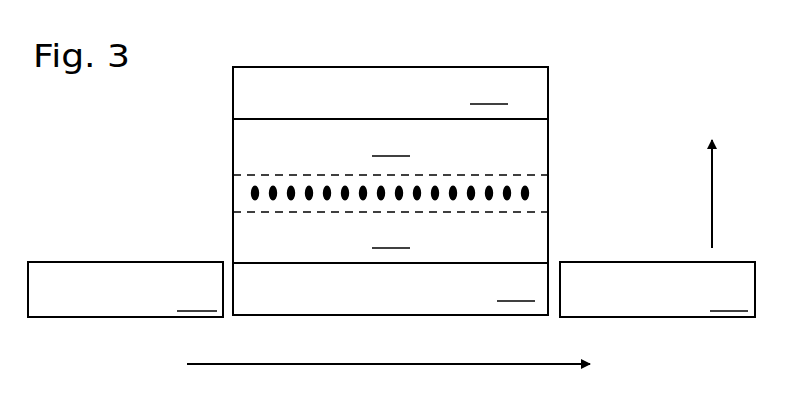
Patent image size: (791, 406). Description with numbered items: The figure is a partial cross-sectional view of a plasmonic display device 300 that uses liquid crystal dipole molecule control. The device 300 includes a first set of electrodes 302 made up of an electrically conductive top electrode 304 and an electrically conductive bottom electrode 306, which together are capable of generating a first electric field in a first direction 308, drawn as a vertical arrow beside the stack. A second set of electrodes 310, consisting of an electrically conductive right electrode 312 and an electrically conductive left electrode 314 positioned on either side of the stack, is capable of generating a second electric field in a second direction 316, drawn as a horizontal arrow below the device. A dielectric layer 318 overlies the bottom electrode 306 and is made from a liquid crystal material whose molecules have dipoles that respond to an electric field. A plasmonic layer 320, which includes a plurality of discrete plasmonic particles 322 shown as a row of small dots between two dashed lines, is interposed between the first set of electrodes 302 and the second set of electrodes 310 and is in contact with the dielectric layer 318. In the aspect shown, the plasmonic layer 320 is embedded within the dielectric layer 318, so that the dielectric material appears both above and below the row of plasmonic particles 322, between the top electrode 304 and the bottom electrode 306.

The plasmonic display device 300 is at (652, 80).
The first set of electrodes 302 is at (338, 191).
The top electrode 304 is at (390, 99).
The bottom electrode 306 is at (390, 283).
The first direction 308 is at (713, 203).
The second set of electrodes 310 is at (128, 317).
The right electrode 312 is at (657, 289).
The left electrode 314 is at (125, 289).
The second direction 316 is at (377, 364).
The dielectric layer 318 is at (391, 191).
The plasmonic layer 320 is at (302, 176).
The plasmonic particles 322 is at (327, 186).